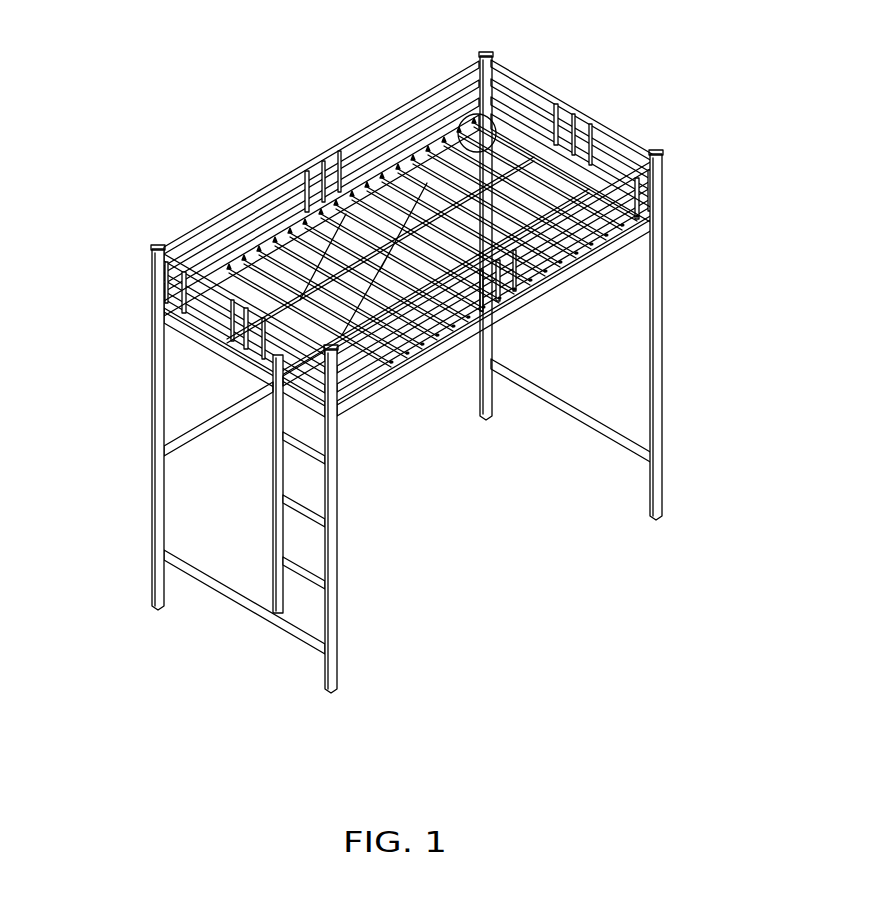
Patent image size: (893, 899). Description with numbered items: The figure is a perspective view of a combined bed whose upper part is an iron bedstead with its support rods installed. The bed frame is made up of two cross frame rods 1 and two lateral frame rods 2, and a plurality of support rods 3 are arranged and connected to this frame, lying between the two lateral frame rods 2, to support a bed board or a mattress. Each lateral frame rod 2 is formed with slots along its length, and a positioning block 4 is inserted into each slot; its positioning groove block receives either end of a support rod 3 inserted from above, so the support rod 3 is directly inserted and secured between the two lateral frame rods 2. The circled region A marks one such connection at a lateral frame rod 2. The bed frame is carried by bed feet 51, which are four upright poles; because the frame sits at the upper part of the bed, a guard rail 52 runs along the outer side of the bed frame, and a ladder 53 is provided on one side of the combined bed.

The cross frame rod 1 is at (166, 318).
The lateral frame rod 2 is at (243, 252).
The support rod 3 is at (300, 243).
The positioning block 4 is at (456, 131).
The bed feet 51 is at (663, 430).
The guard rail 52 is at (572, 110).
The ladder 53 is at (314, 517).
The detail region A is at (468, 117).